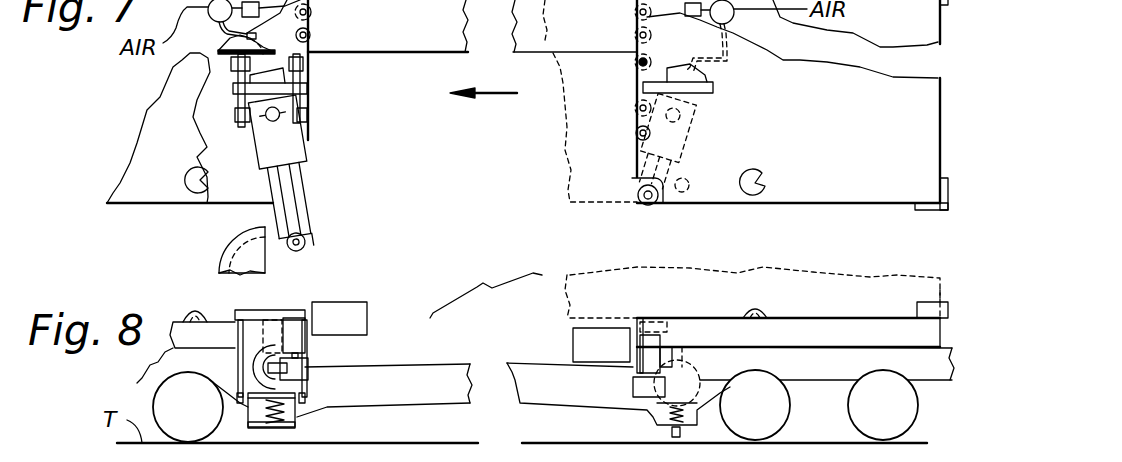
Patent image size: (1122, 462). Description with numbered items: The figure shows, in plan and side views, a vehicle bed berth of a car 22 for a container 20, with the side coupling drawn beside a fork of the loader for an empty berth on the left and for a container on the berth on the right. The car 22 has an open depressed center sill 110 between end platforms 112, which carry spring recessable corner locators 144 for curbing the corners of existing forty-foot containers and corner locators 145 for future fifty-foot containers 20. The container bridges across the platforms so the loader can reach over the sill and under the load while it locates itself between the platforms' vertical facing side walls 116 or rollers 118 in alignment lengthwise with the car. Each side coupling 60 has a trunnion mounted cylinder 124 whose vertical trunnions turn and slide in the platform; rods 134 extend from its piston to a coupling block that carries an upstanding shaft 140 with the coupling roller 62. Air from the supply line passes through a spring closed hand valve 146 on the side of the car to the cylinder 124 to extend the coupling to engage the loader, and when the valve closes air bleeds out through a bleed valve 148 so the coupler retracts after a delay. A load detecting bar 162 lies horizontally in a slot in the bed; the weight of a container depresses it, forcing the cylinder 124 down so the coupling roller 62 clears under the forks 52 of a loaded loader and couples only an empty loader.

In FIG. 7, the container 20 is at (568, 163).
In FIG. 8, the container 20 is at (567, 292).
In FIG. 7, the car 22 is at (137, 133).
In FIG. 8, the car 22 is at (135, 381).
In FIG. 7, the forks 52 is at (226, 266).
In FIG. 8, the forks 52 is at (367, 313).
In FIG. 7, the side coupling 60 is at (307, 218).
In FIG. 7, the coupling roller 62 is at (313, 240).
In FIG. 8, the coupling roller 62 is at (310, 345).
In FIG. 7, the center sill 110 is at (386, 54).
In FIG. 8, the center sill 110 is at (432, 337).
In FIG. 7, the end platforms 112 is at (160, 205).
In FIG. 7, the vertical facing side walls 116 is at (637, 72).
In FIG. 7, the rollers 118 is at (637, 133).
In FIG. 7, the trunnion mounted cylinder 124 is at (302, 153).
In FIG. 8, the trunnion mounted cylinder 124 is at (303, 397).
In FIG. 7, the rods 134 is at (305, 205).
In FIG. 7, the upstanding shaft 140 is at (300, 248).
In FIG. 7, the spring recessable corner locators 144 is at (188, 195).
In FIG. 7, the corner locators 145 is at (930, 0).
In FIG. 7, the spring closed hand valve 146 is at (747, 17).
In FIG. 7, the bleed valve 148 is at (701, 38).
In FIG. 7, the load detecting bar 162 is at (307, 88).